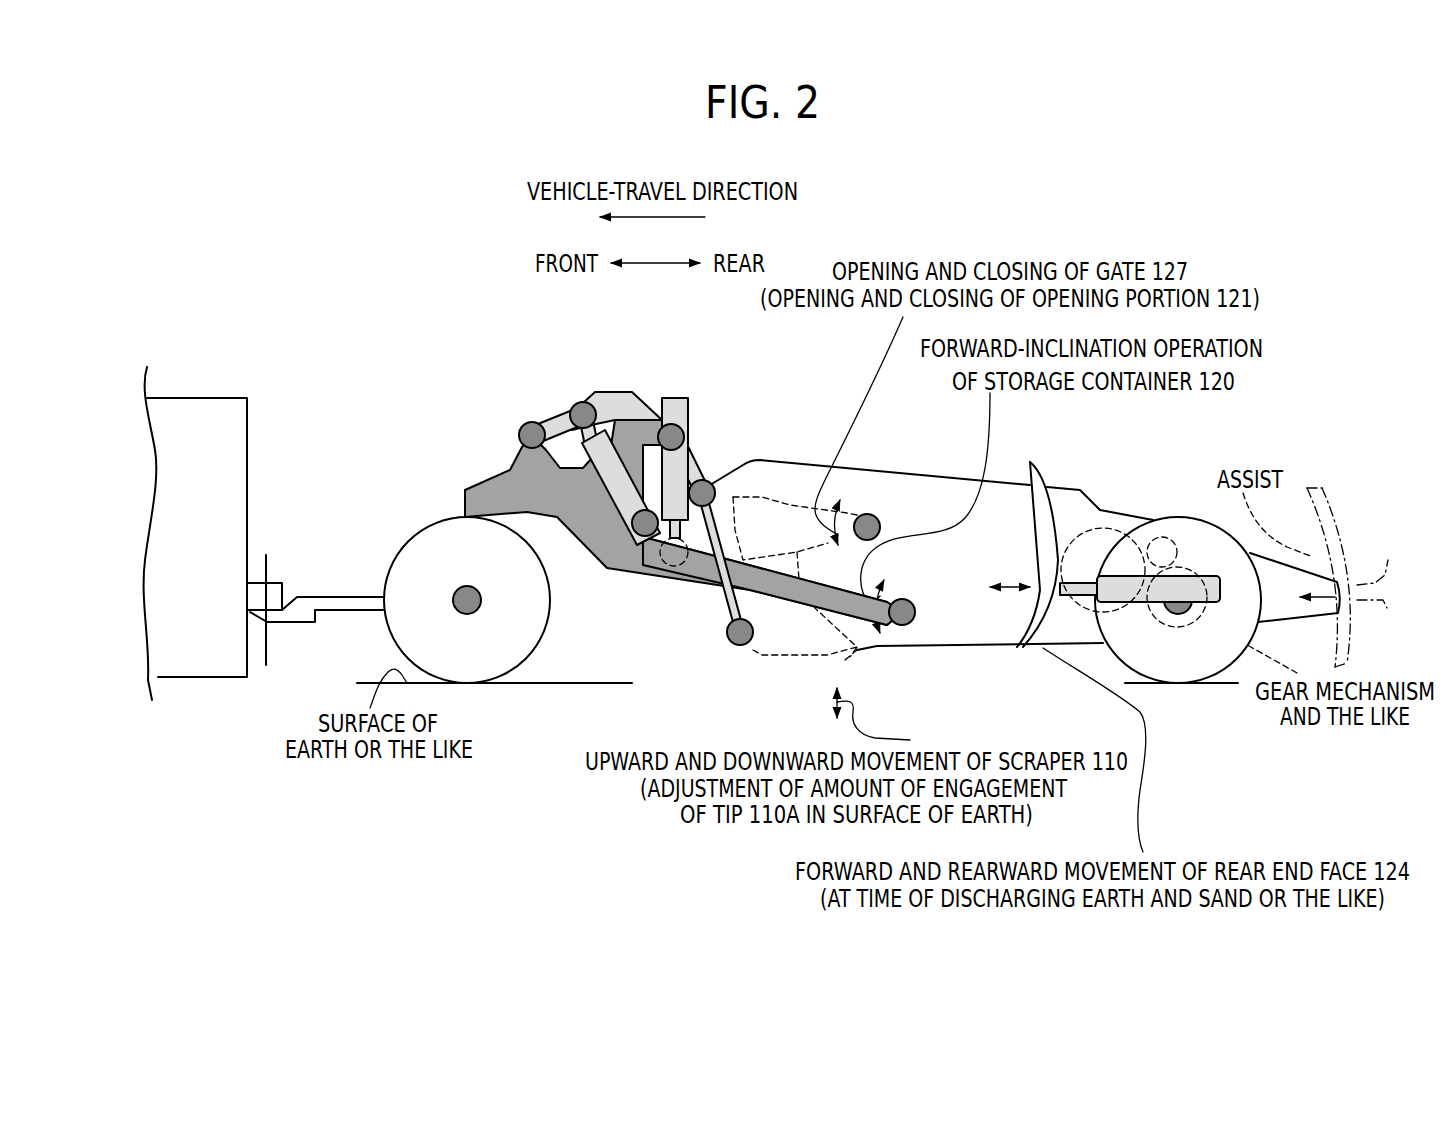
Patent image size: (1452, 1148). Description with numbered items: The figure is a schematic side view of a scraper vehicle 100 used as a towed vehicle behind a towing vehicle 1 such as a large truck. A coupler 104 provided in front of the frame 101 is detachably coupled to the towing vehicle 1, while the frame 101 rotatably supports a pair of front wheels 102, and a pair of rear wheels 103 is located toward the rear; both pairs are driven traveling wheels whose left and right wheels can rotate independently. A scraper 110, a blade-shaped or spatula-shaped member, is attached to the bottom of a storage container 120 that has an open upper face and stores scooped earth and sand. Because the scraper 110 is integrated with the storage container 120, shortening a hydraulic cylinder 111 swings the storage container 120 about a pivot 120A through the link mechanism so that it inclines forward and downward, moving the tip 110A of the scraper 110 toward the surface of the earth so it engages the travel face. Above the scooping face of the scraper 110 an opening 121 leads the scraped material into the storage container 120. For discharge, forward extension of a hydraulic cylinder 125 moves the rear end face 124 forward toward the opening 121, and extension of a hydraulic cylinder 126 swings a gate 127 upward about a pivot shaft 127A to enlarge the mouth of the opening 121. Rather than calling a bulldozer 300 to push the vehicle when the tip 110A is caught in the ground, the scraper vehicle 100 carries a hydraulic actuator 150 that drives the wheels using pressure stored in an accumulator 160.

The towing vehicle 1 is at (233, 437).
The scraper vehicle 100 is at (418, 411).
The frame 101 is at (609, 568).
The front wheels 102 is at (410, 552).
The rear wheels 103 is at (1197, 684).
The coupler 104 is at (277, 623).
The scraper 110 is at (850, 652).
The tip of the scraper 110A is at (853, 650).
The hydraulic cylinder 111 is at (683, 410).
The storage container 120 is at (962, 608).
The pivot 120A is at (917, 627).
The opening 121 is at (820, 665).
The rear end face 124 is at (1040, 532).
The hydraulic cylinder 125 is at (1138, 577).
The hydraulic cylinder 126 is at (597, 450).
The gate 127 is at (788, 507).
The pivot shaft 127A is at (884, 510).
The hydraulic actuator 150 is at (1172, 530).
The accumulator 160 is at (1096, 524).
The bulldozer 300 is at (1355, 500).